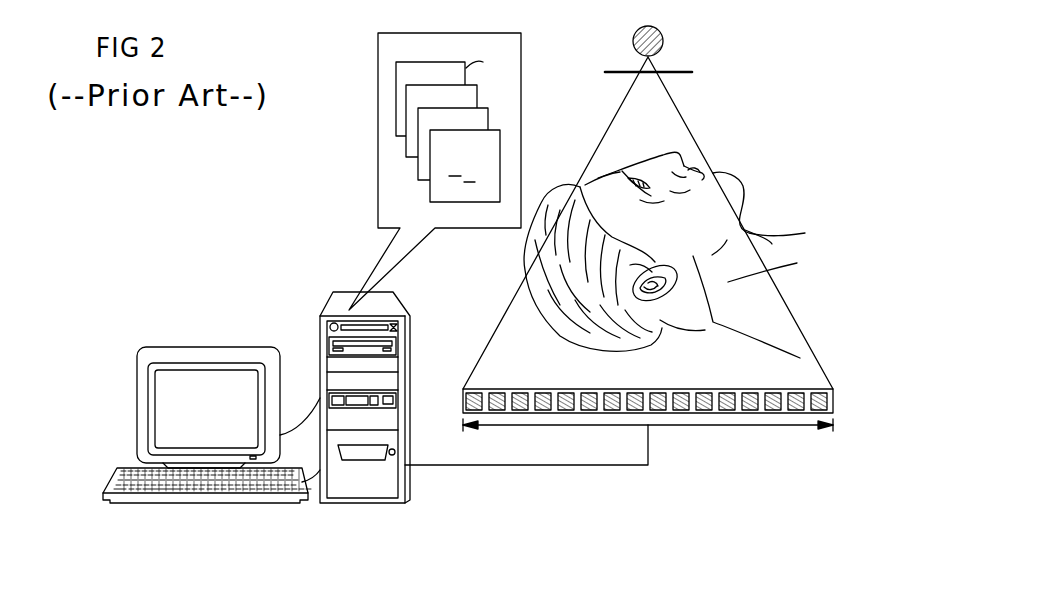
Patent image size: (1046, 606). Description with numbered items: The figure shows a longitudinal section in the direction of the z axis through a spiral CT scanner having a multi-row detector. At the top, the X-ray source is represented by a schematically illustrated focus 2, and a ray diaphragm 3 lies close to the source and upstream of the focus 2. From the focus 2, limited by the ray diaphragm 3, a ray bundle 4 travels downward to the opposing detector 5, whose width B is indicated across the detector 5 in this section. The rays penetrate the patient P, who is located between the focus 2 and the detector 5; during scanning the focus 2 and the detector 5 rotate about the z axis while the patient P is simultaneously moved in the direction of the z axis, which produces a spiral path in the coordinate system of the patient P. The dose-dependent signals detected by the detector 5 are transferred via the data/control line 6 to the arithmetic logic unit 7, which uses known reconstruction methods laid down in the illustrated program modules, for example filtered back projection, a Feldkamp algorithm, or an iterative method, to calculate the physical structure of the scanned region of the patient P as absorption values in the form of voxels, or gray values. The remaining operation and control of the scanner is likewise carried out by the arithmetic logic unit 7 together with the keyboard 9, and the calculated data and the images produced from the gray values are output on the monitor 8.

The focus 2 is at (664, 42).
The ray diaphragm 3 is at (613, 73).
The ray bundle 4 is at (689, 127).
The detector 5 is at (681, 390).
The data/control line 6 is at (511, 468).
The arithmetic logic unit 7 is at (344, 297).
The monitor 8 is at (205, 355).
The keyboard 9 is at (205, 503).
The patient P is at (788, 237).
The width B is at (722, 430).